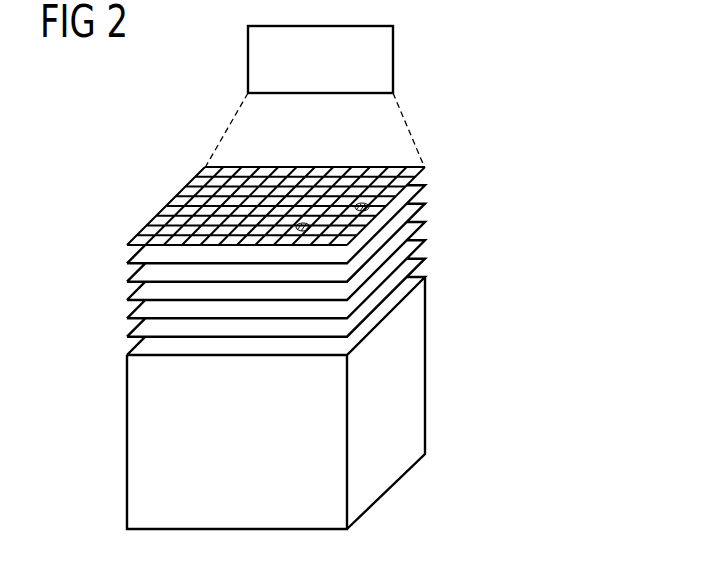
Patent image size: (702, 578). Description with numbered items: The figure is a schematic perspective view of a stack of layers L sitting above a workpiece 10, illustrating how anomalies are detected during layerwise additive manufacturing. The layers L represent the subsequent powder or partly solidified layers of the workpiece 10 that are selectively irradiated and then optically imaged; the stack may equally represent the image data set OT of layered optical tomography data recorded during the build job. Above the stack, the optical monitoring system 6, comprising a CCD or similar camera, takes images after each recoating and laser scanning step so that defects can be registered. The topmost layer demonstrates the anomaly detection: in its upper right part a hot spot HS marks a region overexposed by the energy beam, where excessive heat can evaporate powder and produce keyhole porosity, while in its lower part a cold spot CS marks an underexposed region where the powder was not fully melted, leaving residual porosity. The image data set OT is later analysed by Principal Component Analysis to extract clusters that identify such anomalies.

The optical monitoring system 6 is at (412, 59).
The image data set OT is at (412, 59).
The CCD camera CCD is at (393, 58).
The hot spot HS is at (363, 204).
The cold spot CS is at (303, 228).
The workpiece 10 is at (407, 388).
The layer L is at (106, 288).